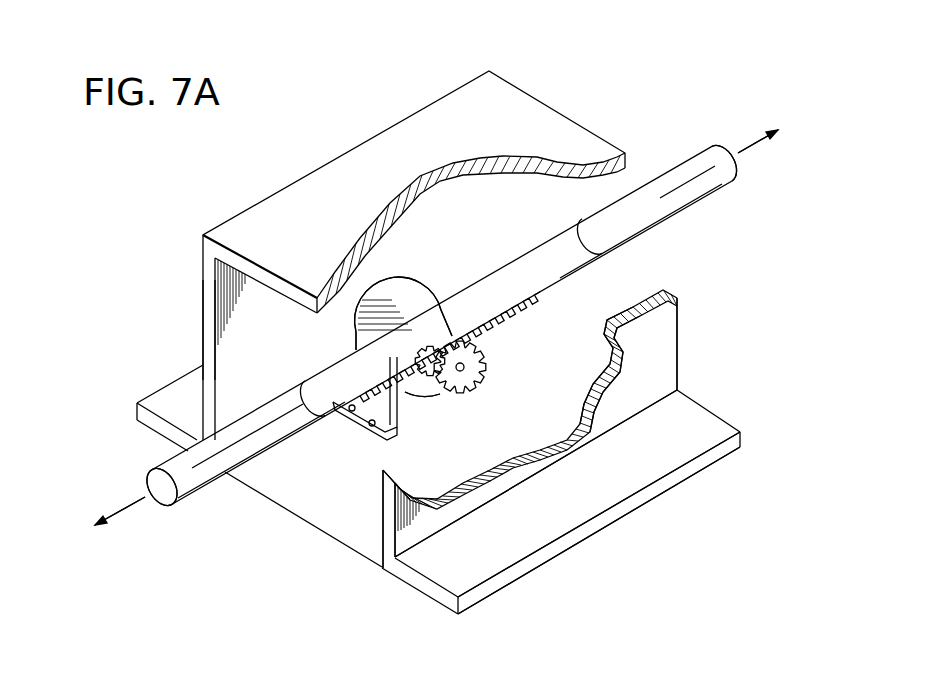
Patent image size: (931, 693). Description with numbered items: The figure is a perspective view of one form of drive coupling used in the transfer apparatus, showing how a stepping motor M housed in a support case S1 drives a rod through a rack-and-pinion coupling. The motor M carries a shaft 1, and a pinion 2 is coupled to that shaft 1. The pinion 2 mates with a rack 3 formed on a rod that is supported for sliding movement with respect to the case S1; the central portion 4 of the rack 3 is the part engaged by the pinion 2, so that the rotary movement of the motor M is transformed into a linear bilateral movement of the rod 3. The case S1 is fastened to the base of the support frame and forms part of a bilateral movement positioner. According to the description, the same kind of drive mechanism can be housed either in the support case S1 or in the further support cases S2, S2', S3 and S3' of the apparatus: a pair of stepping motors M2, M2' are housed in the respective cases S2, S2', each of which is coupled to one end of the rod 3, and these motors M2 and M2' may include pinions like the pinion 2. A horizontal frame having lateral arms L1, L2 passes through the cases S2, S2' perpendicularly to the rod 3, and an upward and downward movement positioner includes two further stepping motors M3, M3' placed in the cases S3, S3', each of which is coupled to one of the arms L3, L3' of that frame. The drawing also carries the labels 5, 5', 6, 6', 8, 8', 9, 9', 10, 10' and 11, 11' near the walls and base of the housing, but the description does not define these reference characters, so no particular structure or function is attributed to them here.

The shaft 1 is at (453, 378).
The pinion 2 is at (488, 364).
The rack 3 is at (201, 482).
The central portion 4 is at (518, 312).
The base plate 5 is at (438, 489).
The base plate (alternate) 5' is at (592, 514).
The support wall 6 is at (530, 429).
The support wall (alternate) 6' is at (614, 357).
The bearing 8 is at (584, 379).
The bearing (alternate) 8' is at (600, 383).
The bearing support 9 is at (594, 341).
The bearing support (alternate) 9' is at (608, 346).
The guide 10 is at (536, 473).
The guide (alternate) 10' is at (592, 530).
The guide member 11 is at (473, 491).
The guide member (alternate) 11' is at (491, 485).
The motor M is at (396, 295).
The stepping motor M2 is at (438, 285).
The stepping motor M2' is at (447, 316).
The stepping motor M3 is at (407, 304).
The stepping motor M3' is at (422, 295).
The support case S1 is at (203, 258).
The support case S2 is at (169, 299).
The support case S2' is at (191, 299).
The support case S3 is at (169, 335).
The support case S3' is at (191, 335).
The lateral arm L1 is at (151, 531).
The lateral arm L2 is at (490, 348).
The arm L3 is at (174, 527).
The arm L3' is at (470, 368).